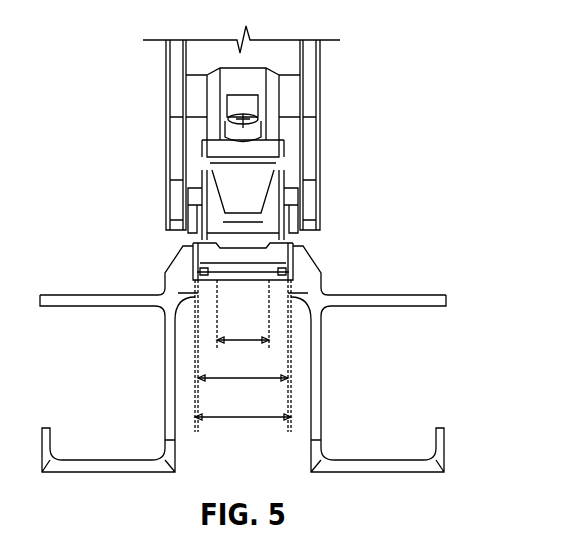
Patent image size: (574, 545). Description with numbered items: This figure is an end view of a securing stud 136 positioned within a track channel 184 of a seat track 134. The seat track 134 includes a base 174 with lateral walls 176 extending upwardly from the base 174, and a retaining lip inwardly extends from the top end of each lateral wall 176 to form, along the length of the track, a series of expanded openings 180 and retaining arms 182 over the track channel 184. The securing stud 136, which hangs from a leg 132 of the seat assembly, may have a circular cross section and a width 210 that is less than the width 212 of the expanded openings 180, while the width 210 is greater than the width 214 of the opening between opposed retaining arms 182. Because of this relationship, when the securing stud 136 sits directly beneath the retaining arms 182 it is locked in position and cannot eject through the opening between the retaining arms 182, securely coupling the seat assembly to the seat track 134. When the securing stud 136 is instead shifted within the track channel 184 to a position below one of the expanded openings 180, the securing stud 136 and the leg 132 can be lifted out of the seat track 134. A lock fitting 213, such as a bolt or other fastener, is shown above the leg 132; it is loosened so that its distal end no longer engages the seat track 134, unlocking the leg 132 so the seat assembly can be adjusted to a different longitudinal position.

The leg 132 is at (320, 77).
The lock fitting 213 is at (257, 116).
The retaining arm 182 is at (197, 250).
The track channel 184 is at (296, 252).
The expanded opening 180 is at (213, 256).
The lateral wall 176 is at (177, 253).
The base 174 is at (410, 307).
The seat track 134 is at (150, 315).
The securing stud 136 is at (203, 270).
The width of the opening between opposed retaining arms 214 is at (243, 341).
The width of the securing stud 210 is at (243, 379).
The width of the expanded openings 212 is at (243, 418).